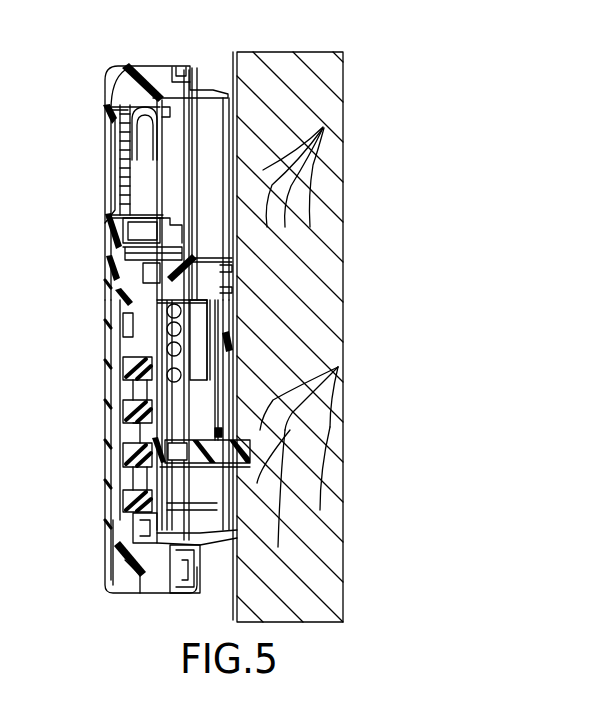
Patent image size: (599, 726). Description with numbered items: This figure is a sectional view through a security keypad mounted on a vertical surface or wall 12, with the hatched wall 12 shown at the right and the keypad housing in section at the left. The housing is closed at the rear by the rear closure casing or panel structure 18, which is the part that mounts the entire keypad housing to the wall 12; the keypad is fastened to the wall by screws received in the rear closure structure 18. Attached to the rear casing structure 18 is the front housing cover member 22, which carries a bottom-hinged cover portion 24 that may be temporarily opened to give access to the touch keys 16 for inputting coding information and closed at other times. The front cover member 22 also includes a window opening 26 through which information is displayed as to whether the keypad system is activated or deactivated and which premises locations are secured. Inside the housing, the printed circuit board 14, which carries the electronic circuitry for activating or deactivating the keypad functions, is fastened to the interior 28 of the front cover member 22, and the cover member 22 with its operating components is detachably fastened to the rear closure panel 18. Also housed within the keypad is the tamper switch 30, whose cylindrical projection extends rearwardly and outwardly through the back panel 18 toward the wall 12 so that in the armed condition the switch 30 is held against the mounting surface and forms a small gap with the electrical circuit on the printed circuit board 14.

The wall 12 is at (343, 82).
The printed circuit board 14 is at (170, 169).
The touch keys 16 is at (130, 370).
The rear closure casing 18 is at (210, 328).
The front housing cover member 22 is at (120, 64).
The bottom-hinged cover portion 24 is at (112, 568).
The window opening 26 is at (168, 169).
The interior of the front cover member 28 is at (150, 340).
The tamper switch 30 is at (237, 440).